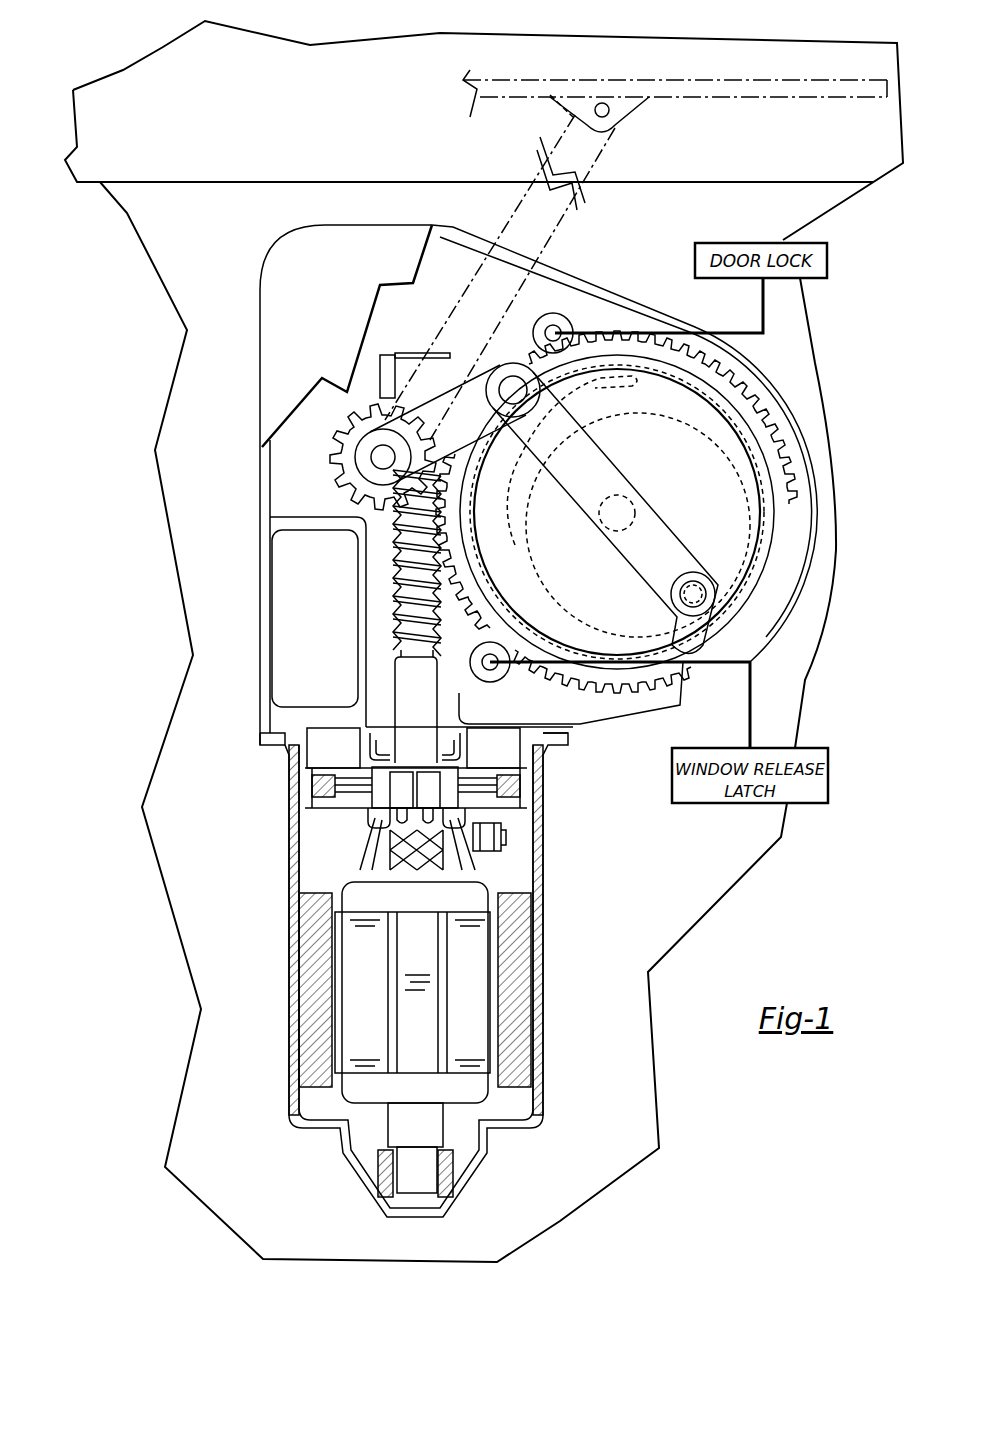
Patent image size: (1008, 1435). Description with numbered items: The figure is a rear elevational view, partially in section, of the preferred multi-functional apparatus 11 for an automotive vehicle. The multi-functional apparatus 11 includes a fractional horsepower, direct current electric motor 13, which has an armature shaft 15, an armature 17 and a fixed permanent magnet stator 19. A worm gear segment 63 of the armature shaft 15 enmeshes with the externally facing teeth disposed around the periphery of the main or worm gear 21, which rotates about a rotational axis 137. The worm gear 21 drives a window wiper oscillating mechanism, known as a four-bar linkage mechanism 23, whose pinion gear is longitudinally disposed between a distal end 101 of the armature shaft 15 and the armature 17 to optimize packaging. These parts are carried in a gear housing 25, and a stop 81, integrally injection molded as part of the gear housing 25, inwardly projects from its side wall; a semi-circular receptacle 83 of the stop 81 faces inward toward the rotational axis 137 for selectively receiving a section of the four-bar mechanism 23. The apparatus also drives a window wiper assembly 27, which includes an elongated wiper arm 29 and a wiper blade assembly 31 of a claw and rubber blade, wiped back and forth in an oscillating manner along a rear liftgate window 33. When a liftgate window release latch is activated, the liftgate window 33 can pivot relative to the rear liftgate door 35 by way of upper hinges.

The multi-functional apparatus 11 is at (257, 786).
The electric motor 13 is at (568, 946).
The armature shaft 15 is at (400, 693).
The armature 17 is at (365, 967).
The permanent magnet stator 19 is at (313, 1025).
The worm gear 21 is at (737, 375).
The four-bar linkage mechanism 23 is at (303, 455).
The gear housing 25 is at (830, 477).
The window wiper assembly 27 is at (468, 191).
The wiper arm 29 is at (542, 222).
The wiper blade assembly 31 is at (637, 88).
The rear liftgate window 33 is at (777, 162).
The rear liftgate door 35 is at (212, 293).
The worm gear segment 63 is at (393, 553).
The stop 81 is at (806, 660).
The semi-circular receptacle 83 is at (740, 625).
The distal end 101 is at (405, 357).
The rotational axis 137 is at (622, 515).